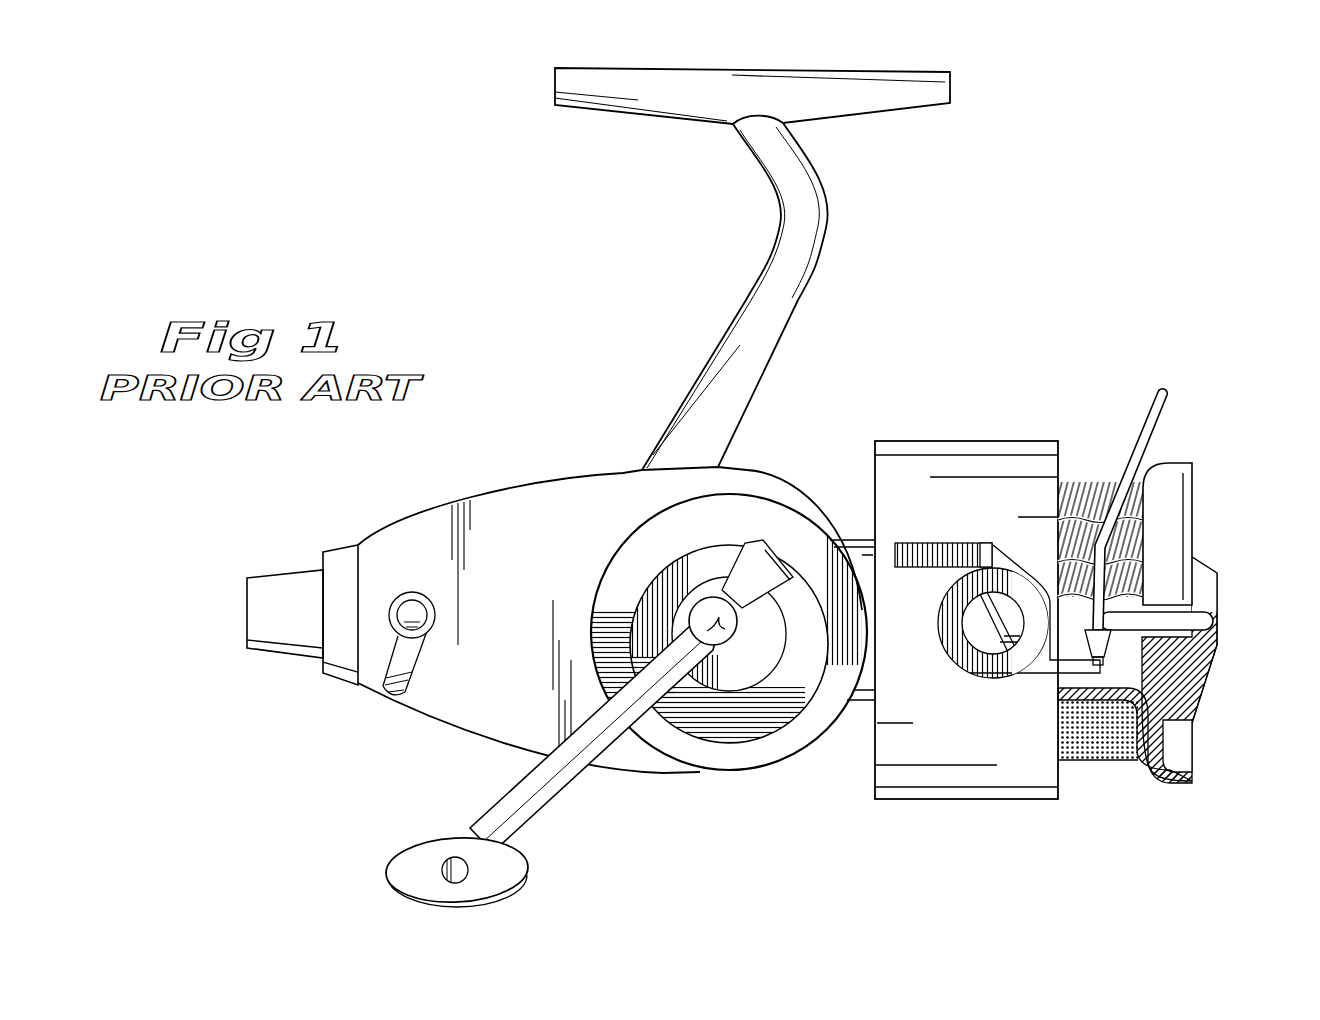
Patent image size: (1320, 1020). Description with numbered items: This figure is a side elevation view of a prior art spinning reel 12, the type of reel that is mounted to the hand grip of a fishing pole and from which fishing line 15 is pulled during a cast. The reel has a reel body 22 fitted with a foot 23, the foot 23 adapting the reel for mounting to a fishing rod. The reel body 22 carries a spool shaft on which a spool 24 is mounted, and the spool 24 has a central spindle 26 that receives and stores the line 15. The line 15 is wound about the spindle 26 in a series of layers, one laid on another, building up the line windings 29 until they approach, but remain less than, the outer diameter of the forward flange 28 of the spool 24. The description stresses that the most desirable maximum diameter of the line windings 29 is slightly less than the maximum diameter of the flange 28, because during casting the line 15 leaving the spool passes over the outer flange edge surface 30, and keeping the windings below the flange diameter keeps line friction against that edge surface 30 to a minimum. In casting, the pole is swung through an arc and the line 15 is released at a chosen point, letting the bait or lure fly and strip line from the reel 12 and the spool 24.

The spinning reel 12 is at (917, 343).
The fishing line 15 is at (1098, 762).
The reel body 22 is at (533, 480).
The foot 23 is at (662, 117).
The spool 24 is at (1195, 502).
The central spindle 26 is at (1057, 737).
The forward flange 28 is at (1173, 463).
The line windings 29 is at (1090, 485).
The outer flange edge surface 30 is at (1153, 773).